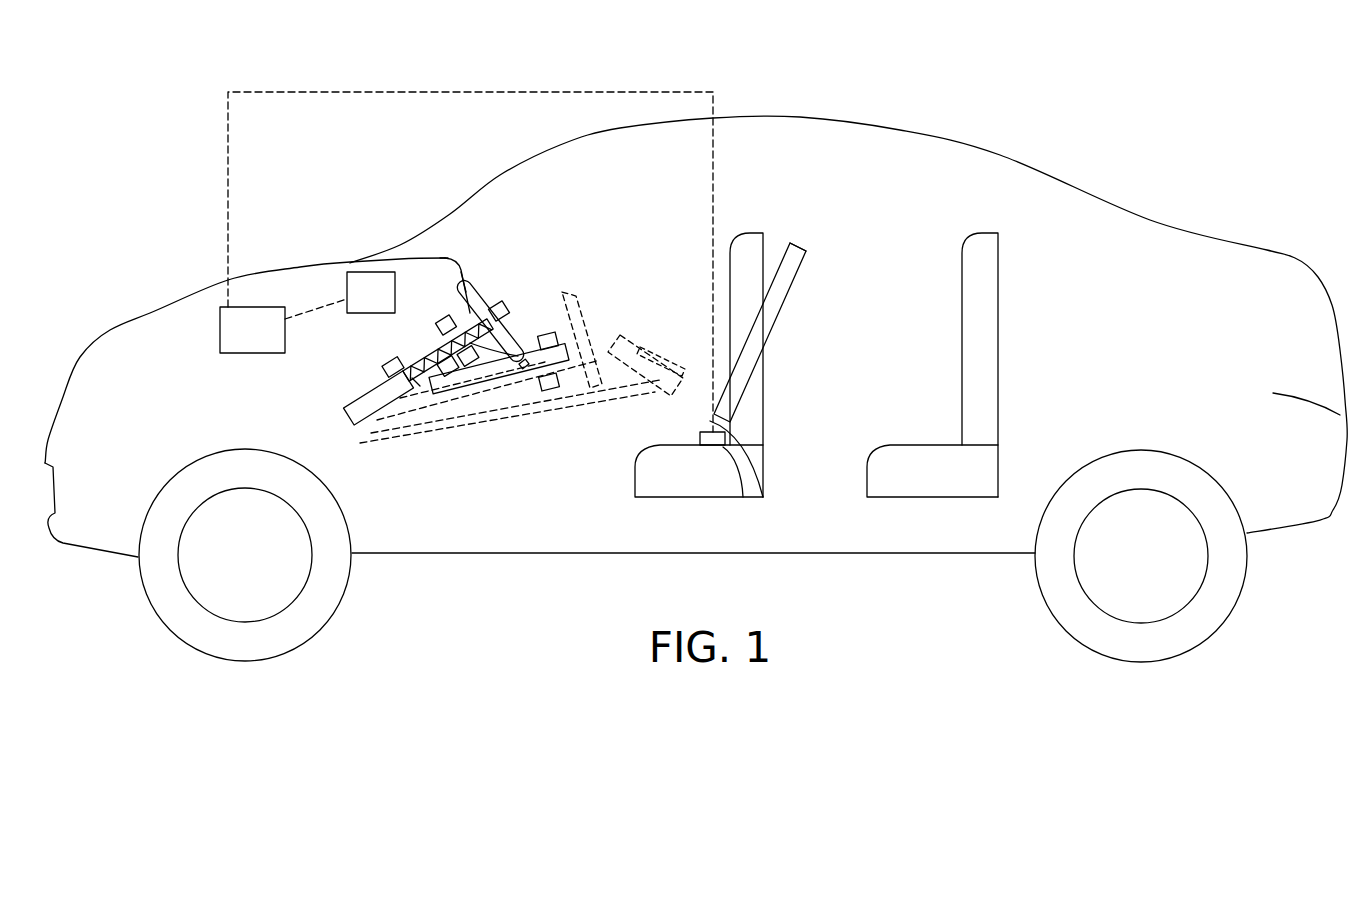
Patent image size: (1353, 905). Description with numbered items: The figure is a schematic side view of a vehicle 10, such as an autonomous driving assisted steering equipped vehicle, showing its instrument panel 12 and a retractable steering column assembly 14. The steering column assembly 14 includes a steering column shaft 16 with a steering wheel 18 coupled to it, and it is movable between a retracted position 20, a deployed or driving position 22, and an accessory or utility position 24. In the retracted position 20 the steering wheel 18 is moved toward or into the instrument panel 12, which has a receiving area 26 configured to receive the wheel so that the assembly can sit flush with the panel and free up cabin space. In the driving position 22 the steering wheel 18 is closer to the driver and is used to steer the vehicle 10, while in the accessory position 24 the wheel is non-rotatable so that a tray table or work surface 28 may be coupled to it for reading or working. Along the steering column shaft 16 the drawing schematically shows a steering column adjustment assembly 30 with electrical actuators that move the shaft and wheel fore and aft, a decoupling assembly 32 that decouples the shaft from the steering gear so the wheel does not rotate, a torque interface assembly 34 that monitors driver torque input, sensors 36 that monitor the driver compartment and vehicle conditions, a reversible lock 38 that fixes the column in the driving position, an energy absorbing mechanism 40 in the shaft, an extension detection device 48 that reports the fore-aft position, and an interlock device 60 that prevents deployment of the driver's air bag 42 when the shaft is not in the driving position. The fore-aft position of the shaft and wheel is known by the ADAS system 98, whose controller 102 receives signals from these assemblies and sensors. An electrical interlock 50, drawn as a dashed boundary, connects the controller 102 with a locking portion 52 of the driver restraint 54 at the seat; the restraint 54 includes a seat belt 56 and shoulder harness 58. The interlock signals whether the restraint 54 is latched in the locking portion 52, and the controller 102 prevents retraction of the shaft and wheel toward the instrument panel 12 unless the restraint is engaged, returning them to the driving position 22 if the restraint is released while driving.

The vehicle 10 is at (1040, 101).
The instrument panel 12 is at (432, 250).
The retractable steering column assembly 14 is at (415, 345).
The steering column shaft 16 is at (342, 401).
The steering wheel 18 is at (470, 292).
The retracted position 20 is at (458, 248).
The driving position 22 is at (596, 284).
The accessory position 24 is at (658, 330).
The receiving area 26 is at (452, 288).
The work surface 28 is at (676, 348).
The steering column adjustment assembly 30 is at (383, 362).
The decoupling assembly 32 is at (438, 320).
The torque interface assembly 34 is at (547, 333).
The sensors 36 is at (500, 305).
The reversible lock 38 is at (554, 392).
The energy absorbing mechanism 40 is at (418, 382).
The air bag 42 is at (604, 397).
The extension detection device 48 is at (452, 372).
The electrical interlock 50 is at (381, 90).
The locking portion 52 is at (700, 436).
The driver restraint 54 is at (813, 245).
The seat belt 56 is at (748, 467).
The shoulder harness 58 is at (788, 278).
The interlock device 60 is at (474, 362).
The ADAS system 98 is at (365, 272).
The controller 102 is at (270, 307).